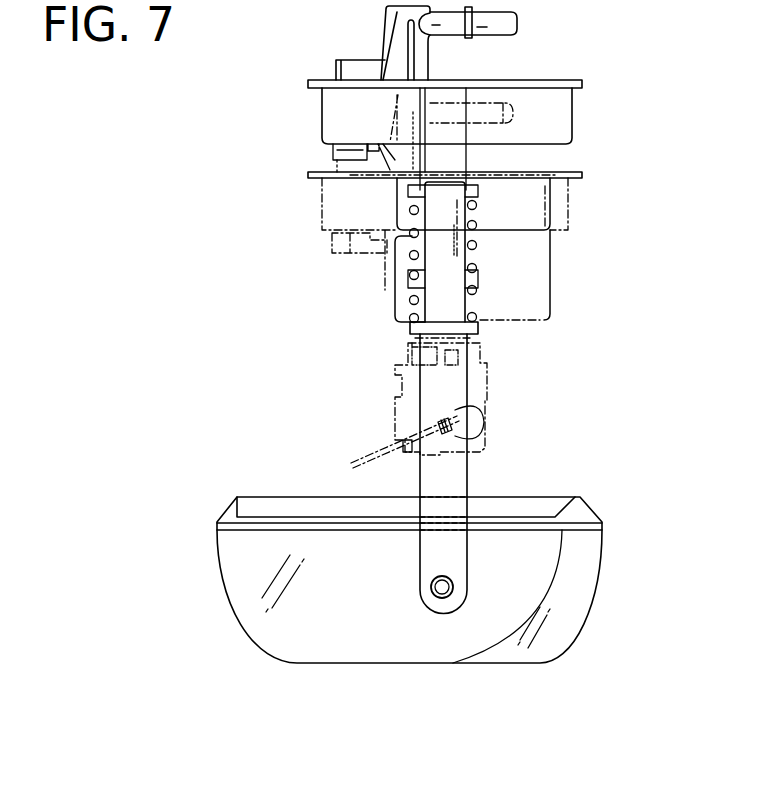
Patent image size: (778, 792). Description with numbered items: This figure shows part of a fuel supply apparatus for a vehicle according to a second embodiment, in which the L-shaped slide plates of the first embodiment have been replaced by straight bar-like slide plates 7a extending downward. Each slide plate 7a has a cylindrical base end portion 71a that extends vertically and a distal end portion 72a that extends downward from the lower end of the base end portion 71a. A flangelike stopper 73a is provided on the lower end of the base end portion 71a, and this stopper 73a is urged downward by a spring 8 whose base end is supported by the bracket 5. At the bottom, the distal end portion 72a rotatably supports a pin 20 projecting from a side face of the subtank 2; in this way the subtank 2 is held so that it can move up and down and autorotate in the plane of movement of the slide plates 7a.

The bracket 5 is at (548, 113).
The cylindrical base end portion 71a is at (447, 279).
The spring 8 is at (478, 319).
The flangelike stopper 73a is at (480, 326).
The slide plate 7a is at (445, 386).
The distal end portion 72a is at (447, 473).
The pin 20 is at (440, 588).
The subtank 2 is at (382, 645).